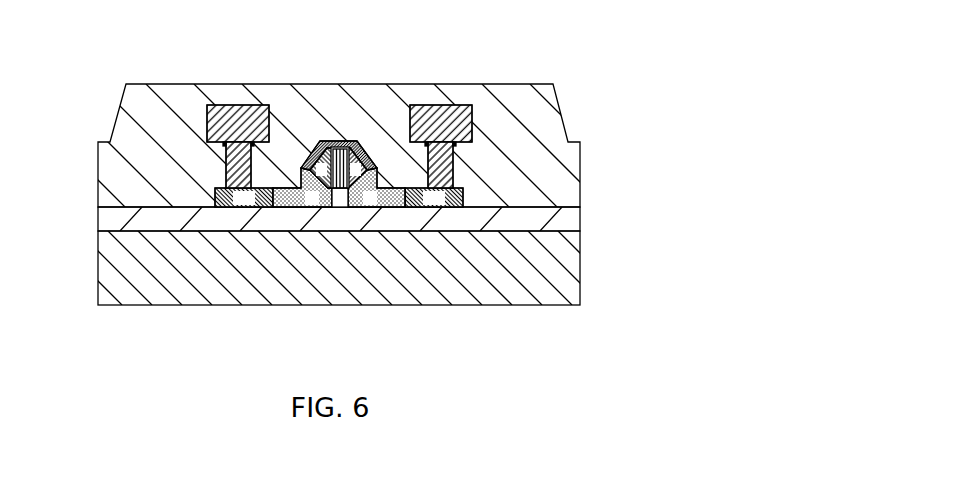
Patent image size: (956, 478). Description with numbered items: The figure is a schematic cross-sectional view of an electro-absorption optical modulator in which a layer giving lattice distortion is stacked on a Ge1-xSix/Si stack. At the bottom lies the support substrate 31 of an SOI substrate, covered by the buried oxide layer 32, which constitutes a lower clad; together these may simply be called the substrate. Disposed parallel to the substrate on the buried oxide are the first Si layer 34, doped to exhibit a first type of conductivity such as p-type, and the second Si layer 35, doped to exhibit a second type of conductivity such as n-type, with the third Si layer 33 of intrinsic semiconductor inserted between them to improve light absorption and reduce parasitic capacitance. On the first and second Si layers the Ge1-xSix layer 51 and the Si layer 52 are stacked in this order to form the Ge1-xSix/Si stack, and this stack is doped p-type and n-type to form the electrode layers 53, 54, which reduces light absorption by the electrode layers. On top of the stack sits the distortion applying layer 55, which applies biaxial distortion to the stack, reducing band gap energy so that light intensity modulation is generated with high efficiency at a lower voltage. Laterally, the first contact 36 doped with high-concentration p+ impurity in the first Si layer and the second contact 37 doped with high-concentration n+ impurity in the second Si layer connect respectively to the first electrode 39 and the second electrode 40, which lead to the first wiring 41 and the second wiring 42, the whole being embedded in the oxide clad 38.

The support substrate 31 is at (560, 273).
The buried oxide layer 32 is at (563, 220).
The third Si layer 33 is at (338, 207).
The first Si layer 34 is at (285, 207).
The second Si layer 35 is at (380, 207).
The first contact 36 is at (220, 207).
The second contact 37 is at (450, 207).
The oxide clad 38 is at (553, 192).
The first electrode 39 is at (228, 160).
The second electrode 40 is at (453, 164).
The first wiring 41 is at (222, 130).
The second wiring 42 is at (472, 130).
The Ge1-xSix layer 51 is at (355, 145).
The Si layer 52 is at (332, 142).
The electrode layer 53 is at (310, 143).
The electrode layer 54 is at (367, 148).
The distortion applying layer 55 is at (340, 143).